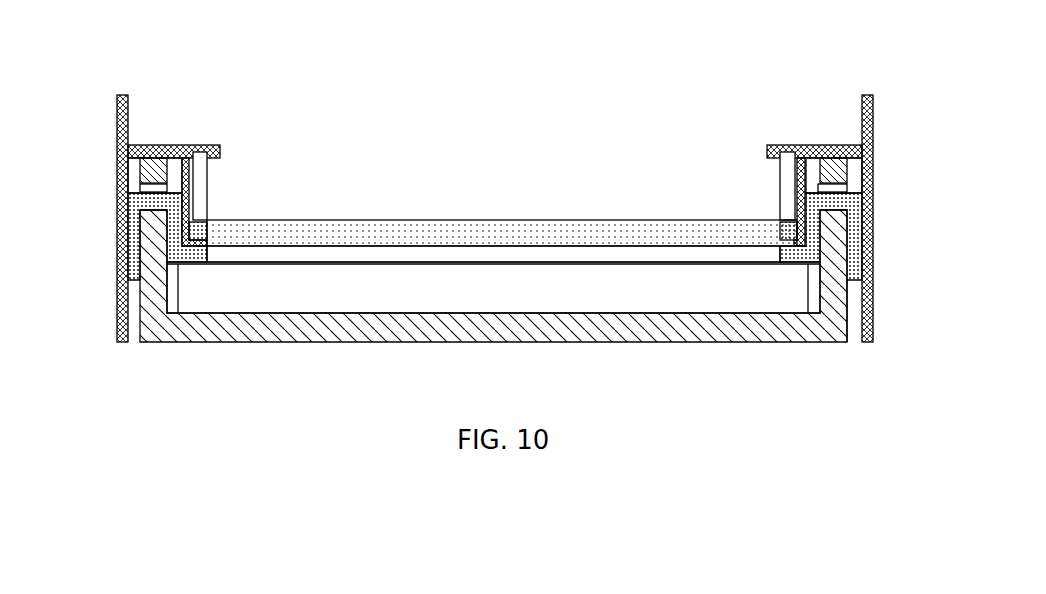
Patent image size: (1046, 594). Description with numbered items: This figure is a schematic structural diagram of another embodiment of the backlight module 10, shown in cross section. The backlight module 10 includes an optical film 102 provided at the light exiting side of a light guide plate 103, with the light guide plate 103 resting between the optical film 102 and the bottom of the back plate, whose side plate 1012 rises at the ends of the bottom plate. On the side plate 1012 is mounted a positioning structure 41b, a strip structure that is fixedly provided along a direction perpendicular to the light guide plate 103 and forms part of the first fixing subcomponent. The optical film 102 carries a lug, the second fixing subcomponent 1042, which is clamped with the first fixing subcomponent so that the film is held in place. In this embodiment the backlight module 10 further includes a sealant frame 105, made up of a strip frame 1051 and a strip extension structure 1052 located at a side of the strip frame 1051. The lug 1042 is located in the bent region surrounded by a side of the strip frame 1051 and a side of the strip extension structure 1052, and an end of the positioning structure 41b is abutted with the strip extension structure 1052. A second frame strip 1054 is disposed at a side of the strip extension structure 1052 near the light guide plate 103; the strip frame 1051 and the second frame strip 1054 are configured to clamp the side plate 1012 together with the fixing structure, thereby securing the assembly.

The backlight module 10 is at (151, 58).
The sealant frame 105 is at (457, 213).
The strip frame 1051 is at (129, 117).
The strip extension structure 1052 is at (160, 144).
The second frame strip 1054 is at (188, 190).
The positioning structure 41b is at (209, 192).
The second fixing subcomponent 1042 is at (215, 218).
The optical film 102 is at (493, 196).
The light guide plate 103 is at (481, 288).
The side plate 1012 is at (848, 317).